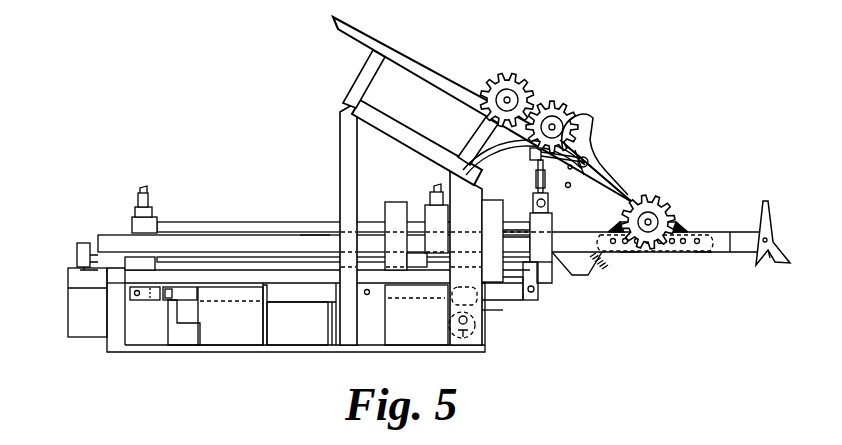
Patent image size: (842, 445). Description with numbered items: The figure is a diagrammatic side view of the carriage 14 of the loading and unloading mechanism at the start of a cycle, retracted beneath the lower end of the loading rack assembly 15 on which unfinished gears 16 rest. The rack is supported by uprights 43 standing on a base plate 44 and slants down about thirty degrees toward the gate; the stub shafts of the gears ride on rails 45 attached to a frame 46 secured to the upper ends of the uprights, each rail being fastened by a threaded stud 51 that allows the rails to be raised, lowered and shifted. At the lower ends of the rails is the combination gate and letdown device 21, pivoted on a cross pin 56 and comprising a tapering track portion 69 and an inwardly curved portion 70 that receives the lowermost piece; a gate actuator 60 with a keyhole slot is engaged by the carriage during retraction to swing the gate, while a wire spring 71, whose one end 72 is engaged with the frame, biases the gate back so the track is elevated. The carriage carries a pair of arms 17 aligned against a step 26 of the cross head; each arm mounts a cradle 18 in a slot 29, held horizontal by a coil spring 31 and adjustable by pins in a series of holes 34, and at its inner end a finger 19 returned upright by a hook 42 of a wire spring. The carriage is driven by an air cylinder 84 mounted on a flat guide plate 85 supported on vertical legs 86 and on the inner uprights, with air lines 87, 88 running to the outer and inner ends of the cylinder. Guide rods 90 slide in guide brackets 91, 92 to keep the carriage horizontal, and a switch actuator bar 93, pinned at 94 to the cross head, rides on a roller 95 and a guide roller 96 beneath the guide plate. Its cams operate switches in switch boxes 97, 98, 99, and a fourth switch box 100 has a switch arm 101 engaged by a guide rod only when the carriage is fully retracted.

The carriage 14 is at (553, 225).
The loading rack assembly 15 is at (370, 32).
The unfinished gears 16 is at (514, 74).
The arms 17 is at (682, 252).
The cradles 18 is at (631, 253).
The fingers 19 is at (763, 214).
The combination gate and letdown device 21 is at (600, 152).
The step 26 is at (545, 272).
The slot 29 is at (700, 233).
The coil spring 31 is at (601, 272).
The holes 34 is at (701, 253).
The hook 42 is at (769, 264).
The uprights 43 is at (340, 163).
The base plate 44 is at (215, 352).
The rails 45 is at (437, 72).
The frame 46 is at (404, 141).
The threaded stud 51 is at (368, 87).
The cross pin 56 is at (589, 128).
The gate actuator 60 is at (546, 181).
The tapering track portion 69 is at (640, 197).
The inwardly curved portion 70 is at (598, 160).
The wire spring 71 is at (512, 146).
The end of wire spring 72 is at (471, 191).
The air cylinder 84 is at (256, 222).
The guide plate 85 is at (220, 266).
The vertical legs 86 is at (115, 338).
The air line 87 is at (140, 194).
The air line 88 is at (433, 190).
The guide rods 90 is at (312, 235).
The guide bracket 91 is at (385, 212).
The guide bracket 92 is at (497, 216).
The switch actuator bar 93 is at (309, 290).
The pin 94 is at (533, 300).
The roller 95 is at (461, 340).
The guide roller 96 is at (135, 301).
The switch box 97 is at (241, 333).
The switch box 98 is at (409, 330).
The switch box 99 is at (303, 330).
The switch box 100 is at (68, 312).
The switch arm 101 is at (82, 240).